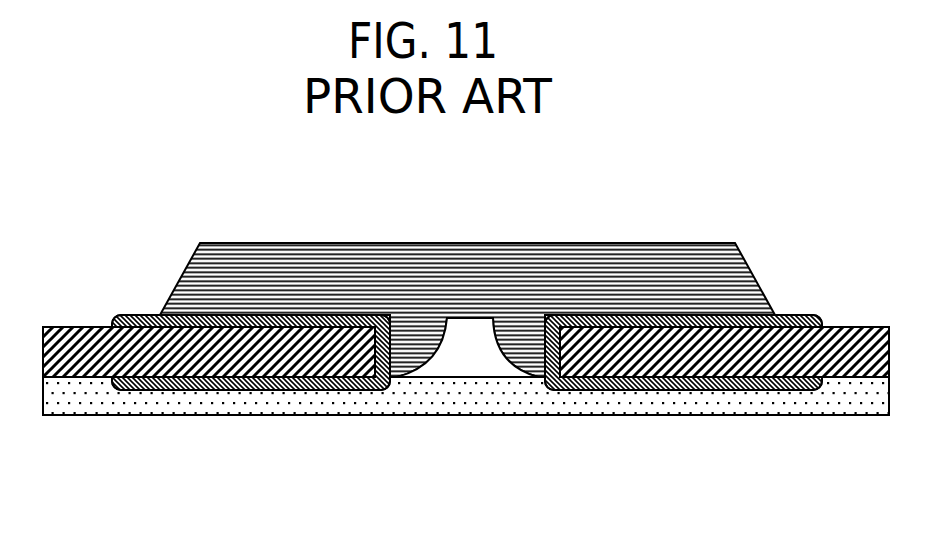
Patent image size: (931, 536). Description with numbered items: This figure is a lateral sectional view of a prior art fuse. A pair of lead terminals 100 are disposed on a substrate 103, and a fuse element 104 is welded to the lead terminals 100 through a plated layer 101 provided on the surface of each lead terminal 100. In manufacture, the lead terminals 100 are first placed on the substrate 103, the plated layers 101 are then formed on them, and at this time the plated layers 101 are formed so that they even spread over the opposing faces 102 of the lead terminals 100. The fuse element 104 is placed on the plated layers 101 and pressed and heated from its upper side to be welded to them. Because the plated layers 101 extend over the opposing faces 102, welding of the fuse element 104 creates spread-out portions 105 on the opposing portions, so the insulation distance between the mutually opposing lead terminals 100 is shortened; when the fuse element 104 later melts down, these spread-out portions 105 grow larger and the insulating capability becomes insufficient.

The lead terminal 100 is at (90, 348).
The plated layer 101 is at (207, 317).
The opposing face 102 is at (363, 385).
The substrate 103 is at (772, 400).
The fuse element 104 is at (628, 280).
The spread-out portion 105 is at (424, 338).